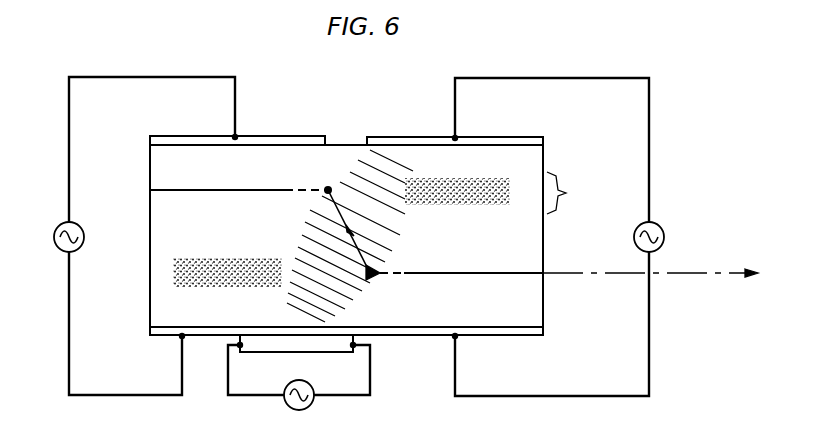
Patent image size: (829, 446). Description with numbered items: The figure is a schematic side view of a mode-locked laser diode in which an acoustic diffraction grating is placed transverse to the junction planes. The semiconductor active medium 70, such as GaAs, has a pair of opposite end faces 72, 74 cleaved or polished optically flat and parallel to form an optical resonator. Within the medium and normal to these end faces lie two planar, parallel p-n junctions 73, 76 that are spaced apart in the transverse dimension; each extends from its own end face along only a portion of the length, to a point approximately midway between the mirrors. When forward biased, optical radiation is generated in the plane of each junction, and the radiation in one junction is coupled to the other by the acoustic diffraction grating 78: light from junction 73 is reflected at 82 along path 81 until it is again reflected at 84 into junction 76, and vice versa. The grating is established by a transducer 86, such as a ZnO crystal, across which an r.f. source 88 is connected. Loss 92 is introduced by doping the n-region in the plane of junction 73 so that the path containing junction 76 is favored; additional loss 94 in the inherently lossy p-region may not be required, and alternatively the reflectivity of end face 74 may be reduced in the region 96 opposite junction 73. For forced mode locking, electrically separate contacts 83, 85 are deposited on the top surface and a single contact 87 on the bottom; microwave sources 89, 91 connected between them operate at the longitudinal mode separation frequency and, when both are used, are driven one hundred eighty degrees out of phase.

The semiconductor active medium 70 is at (296, 150).
The end face 72 is at (148, 266).
The p-n junction 73 is at (240, 190).
The end face 74 is at (543, 152).
The p-n junction 76 is at (455, 271).
The acoustic diffraction grating 78 is at (362, 173).
The path 81 is at (340, 216).
The reflection point 82 is at (330, 187).
The contact 83 is at (250, 136).
The reflection point 84 is at (372, 277).
The contact 85 is at (467, 141).
The transducer 86 is at (345, 352).
The contact 87 is at (430, 327).
The r.f. source 88 is at (307, 405).
The microwave source 89 is at (60, 248).
The microwave source 91 is at (660, 230).
The loss region 92 is at (472, 187).
The additional loss region 94 is at (213, 284).
The reduced reflectivity region 96 is at (567, 193).